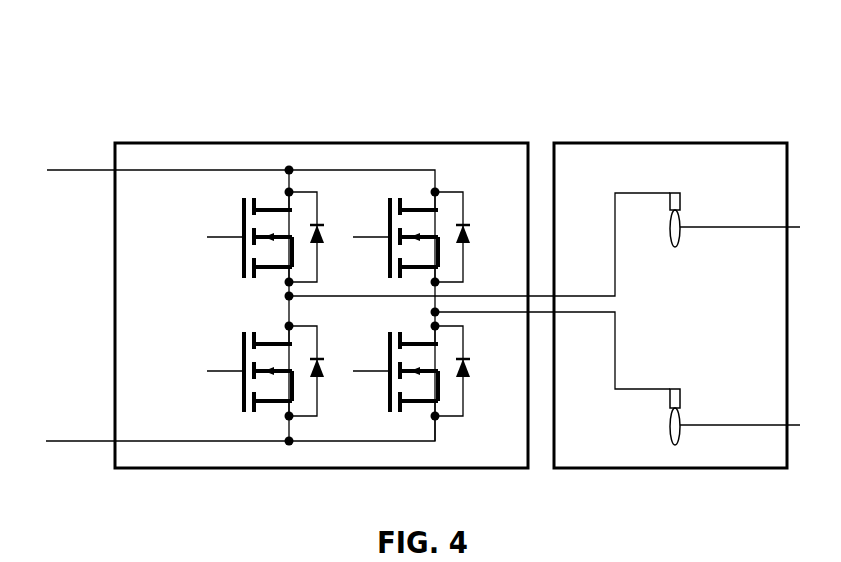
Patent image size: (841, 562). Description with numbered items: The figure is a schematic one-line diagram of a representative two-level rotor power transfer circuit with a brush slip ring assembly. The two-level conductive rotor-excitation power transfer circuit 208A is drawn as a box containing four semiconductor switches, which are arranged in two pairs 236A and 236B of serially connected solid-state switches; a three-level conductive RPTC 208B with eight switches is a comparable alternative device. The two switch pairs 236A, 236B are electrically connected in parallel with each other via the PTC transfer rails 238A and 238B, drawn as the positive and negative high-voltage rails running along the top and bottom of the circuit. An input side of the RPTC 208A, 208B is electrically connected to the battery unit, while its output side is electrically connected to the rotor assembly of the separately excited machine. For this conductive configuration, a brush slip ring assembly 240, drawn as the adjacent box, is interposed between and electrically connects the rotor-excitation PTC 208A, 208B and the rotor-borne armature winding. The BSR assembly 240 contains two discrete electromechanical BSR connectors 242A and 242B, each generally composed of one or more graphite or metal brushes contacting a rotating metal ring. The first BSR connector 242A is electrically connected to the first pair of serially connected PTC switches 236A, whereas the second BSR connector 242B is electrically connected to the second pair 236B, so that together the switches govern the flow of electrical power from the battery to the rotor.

The 2-level conductive rotor-excitation power transfer circuit (RPTC) 208A is at (285, 105).
The 3-level conductive RPTC 208B is at (287, 555).
The first pair of serially connected solid-state switches 236A is at (251, 168).
The second pair of serially connected solid-state switches 236B is at (396, 168).
The PTC transfer rail 238A is at (137, 172).
The PTC transfer rail 238B is at (138, 441).
The brush slip ring (BSR) assembly 240 is at (621, 105).
The first BSR connector 242A is at (680, 237).
The second BSR connector 242B is at (680, 435).